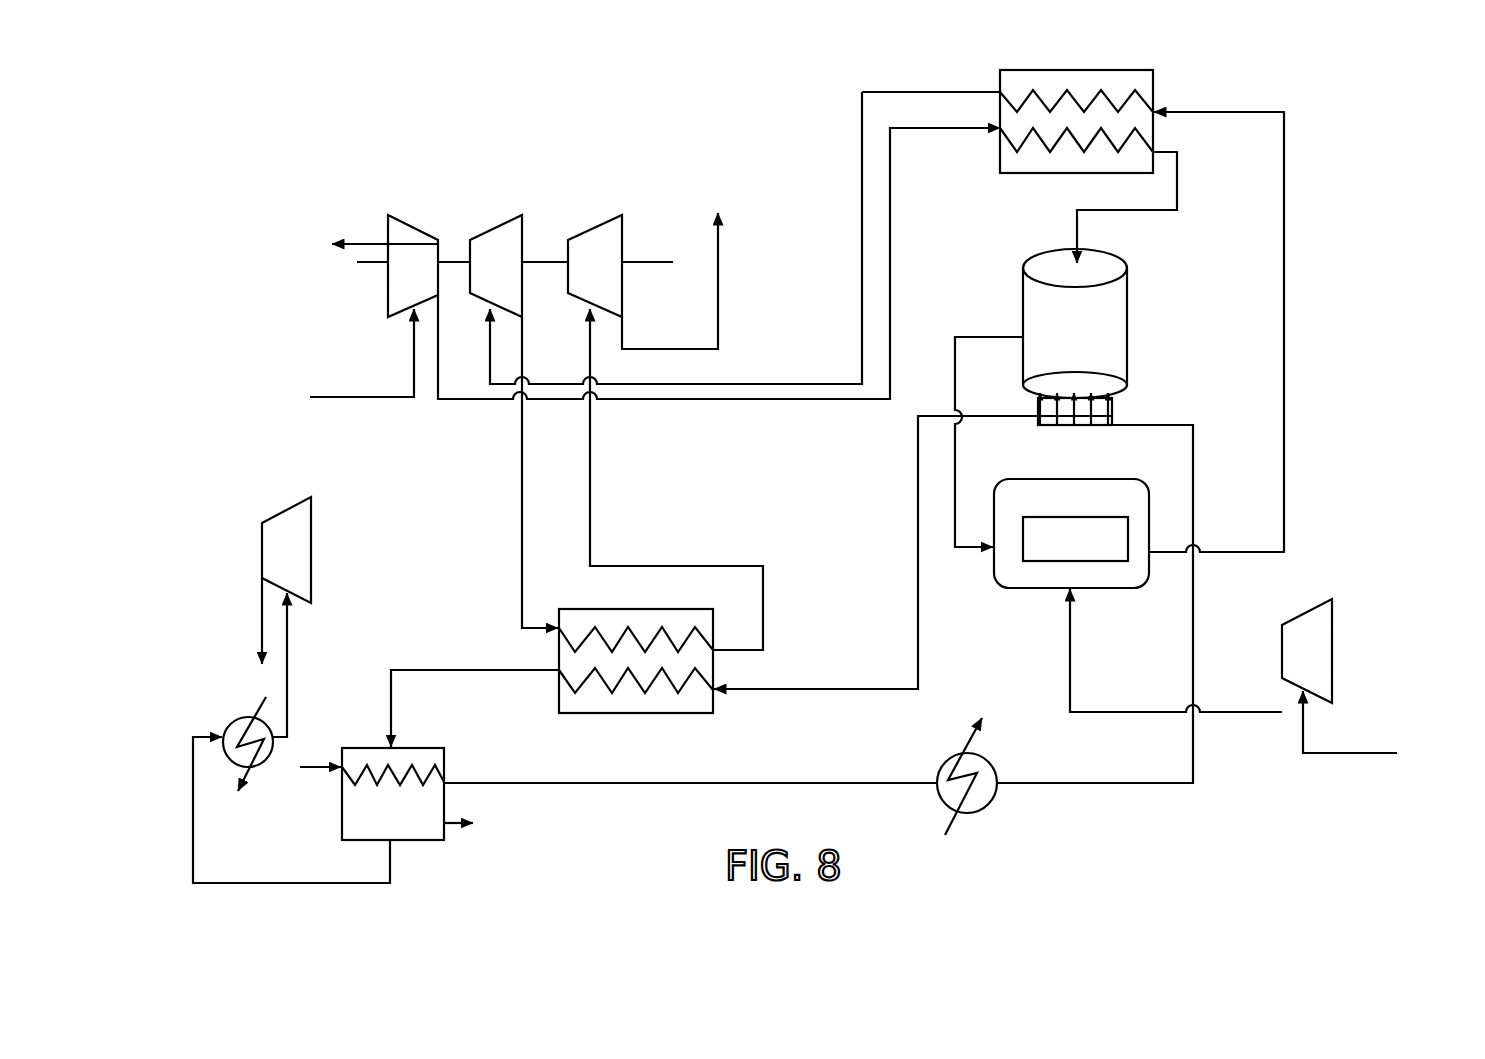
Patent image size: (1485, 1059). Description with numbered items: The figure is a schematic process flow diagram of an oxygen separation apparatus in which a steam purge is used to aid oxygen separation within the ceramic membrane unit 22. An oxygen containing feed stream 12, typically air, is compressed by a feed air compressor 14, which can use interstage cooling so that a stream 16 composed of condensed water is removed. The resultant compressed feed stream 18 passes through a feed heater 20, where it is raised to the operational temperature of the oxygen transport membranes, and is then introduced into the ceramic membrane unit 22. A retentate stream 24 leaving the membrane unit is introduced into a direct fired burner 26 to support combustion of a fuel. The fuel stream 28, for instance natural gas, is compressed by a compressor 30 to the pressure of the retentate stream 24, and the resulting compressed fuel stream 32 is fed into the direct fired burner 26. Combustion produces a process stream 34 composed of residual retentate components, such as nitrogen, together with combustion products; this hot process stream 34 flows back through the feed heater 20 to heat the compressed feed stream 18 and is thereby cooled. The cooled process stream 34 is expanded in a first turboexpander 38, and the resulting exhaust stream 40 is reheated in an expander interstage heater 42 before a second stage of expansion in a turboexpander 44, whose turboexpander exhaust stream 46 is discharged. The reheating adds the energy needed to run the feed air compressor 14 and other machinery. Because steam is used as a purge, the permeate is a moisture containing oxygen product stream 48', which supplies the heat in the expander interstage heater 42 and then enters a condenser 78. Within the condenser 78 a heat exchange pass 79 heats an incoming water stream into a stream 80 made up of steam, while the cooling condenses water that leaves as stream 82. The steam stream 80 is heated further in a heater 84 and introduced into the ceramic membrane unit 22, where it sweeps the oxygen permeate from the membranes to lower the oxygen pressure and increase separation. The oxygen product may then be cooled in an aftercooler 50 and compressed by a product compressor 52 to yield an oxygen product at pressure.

The feed stream 12 is at (370, 398).
The feed air compressor 14 is at (394, 290).
The stream composed of condensed water 16 is at (366, 240).
The compressed feed stream 18 is at (752, 400).
The feed heater 20 is at (1022, 173).
The ceramic membrane unit 22 is at (1137, 300).
The retentate stream 24 is at (967, 337).
The direct fired burner 26 is at (1025, 588).
The fuel stream 28 is at (1357, 752).
The compressor 30 is at (1318, 647).
The compressed fuel stream 32 is at (1070, 647).
The process stream 34 is at (1284, 465).
The turboexpander 38 is at (503, 237).
The exhaust stream 40 is at (518, 513).
The expander interstage heater 42 is at (558, 693).
The turboexpander 44 is at (609, 235).
The turboexpander exhaust stream 46 is at (720, 286).
The moisture containing oxygen product stream 48' is at (876, 552).
The aftercooler 50 is at (236, 778).
The product compressor 52 is at (295, 558).
The condenser 78 is at (425, 757).
The heat exchange pass 79 is at (445, 767).
The stream made up of steam 80 is at (743, 783).
The stream 82 is at (450, 813).
The heater 84 is at (985, 800).